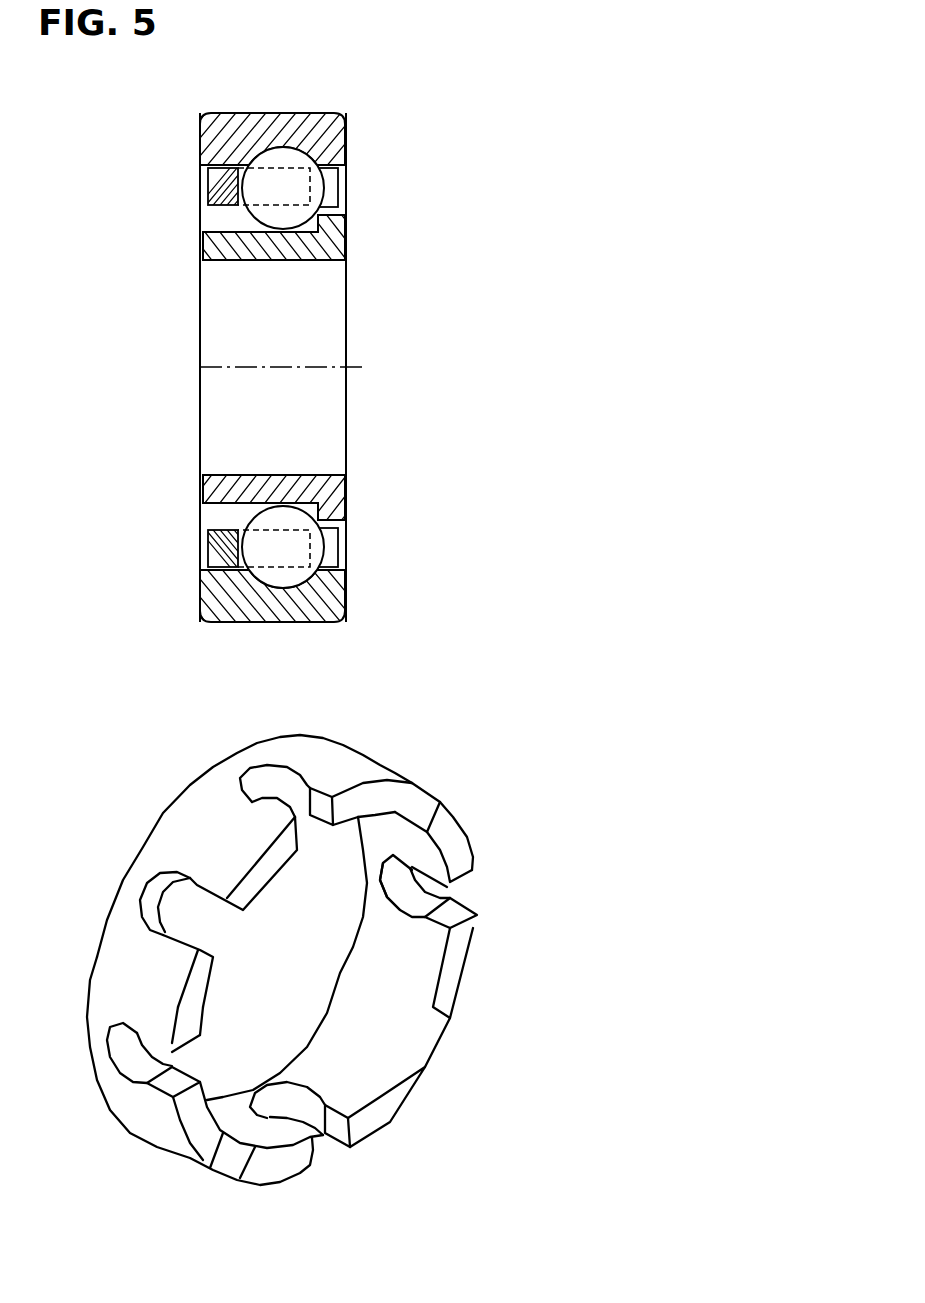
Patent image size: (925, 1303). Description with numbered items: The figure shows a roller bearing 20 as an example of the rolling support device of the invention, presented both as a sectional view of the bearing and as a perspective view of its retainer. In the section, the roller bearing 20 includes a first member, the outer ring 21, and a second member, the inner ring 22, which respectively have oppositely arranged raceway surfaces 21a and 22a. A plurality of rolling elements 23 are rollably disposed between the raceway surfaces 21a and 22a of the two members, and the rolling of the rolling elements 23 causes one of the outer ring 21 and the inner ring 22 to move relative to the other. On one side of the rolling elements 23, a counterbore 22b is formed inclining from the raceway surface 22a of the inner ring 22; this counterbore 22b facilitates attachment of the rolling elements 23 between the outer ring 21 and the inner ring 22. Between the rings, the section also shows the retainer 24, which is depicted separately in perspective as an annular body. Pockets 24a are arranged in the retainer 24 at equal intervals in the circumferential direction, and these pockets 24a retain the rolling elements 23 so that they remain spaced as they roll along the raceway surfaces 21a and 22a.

The roller bearing 20 is at (193, 107).
The first member (outer ring) 21 is at (270, 127).
The raceway surface 21a is at (341, 135).
The second member (inner ring) 22 is at (265, 258).
The raceway surface 22a is at (318, 222).
The counterbore 22b is at (215, 235).
The rolling elements 23 is at (292, 158).
The retainer 24 is at (208, 192).
The pockets 24a is at (477, 892).